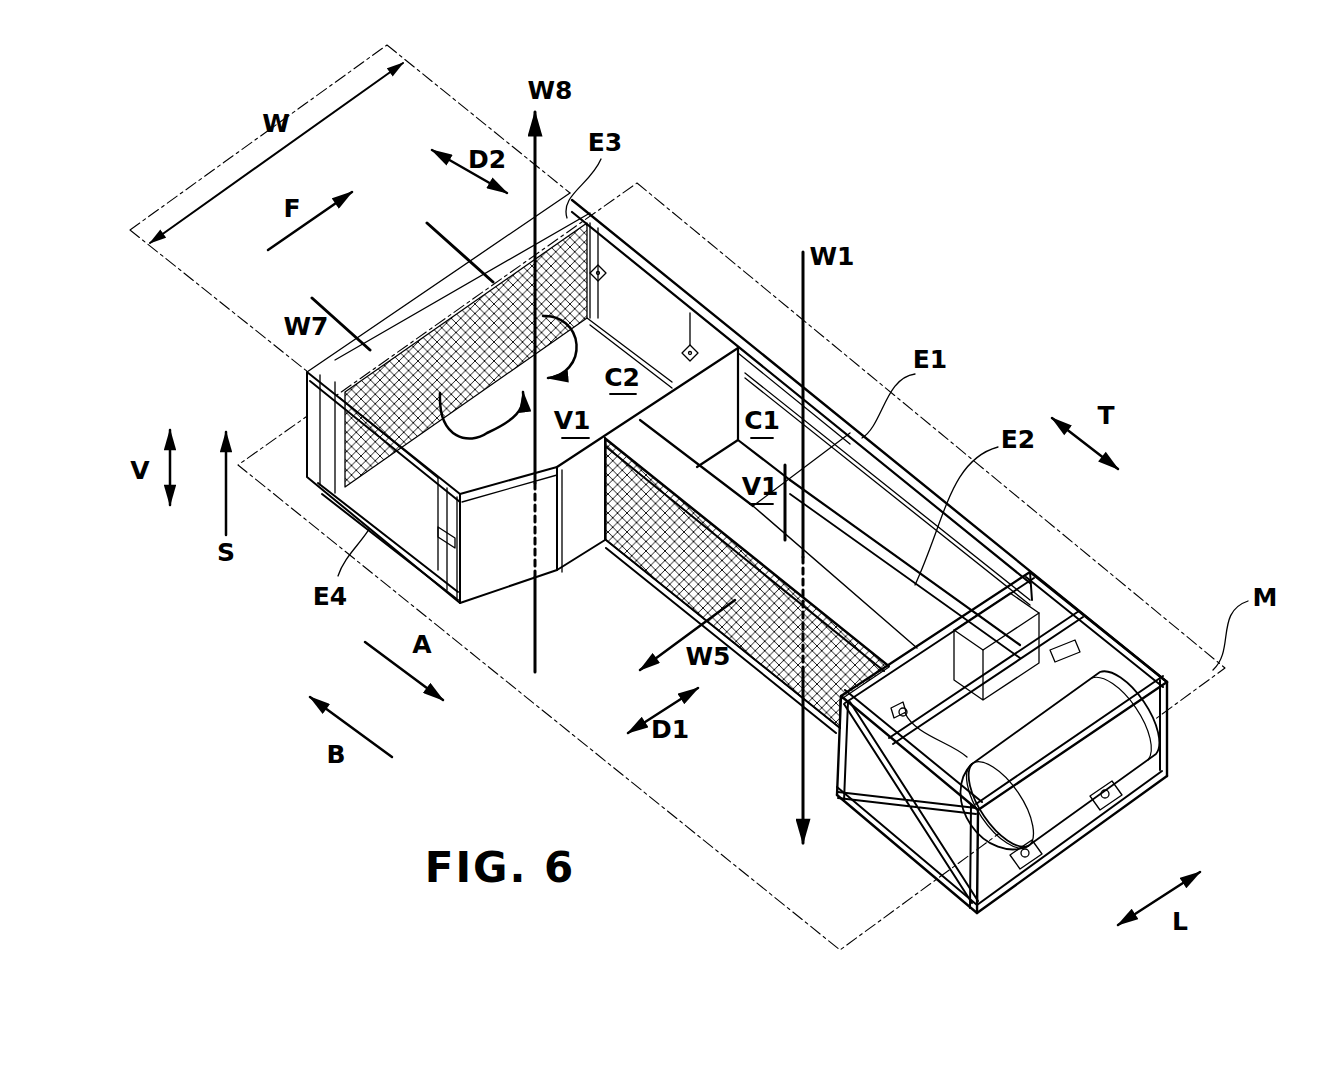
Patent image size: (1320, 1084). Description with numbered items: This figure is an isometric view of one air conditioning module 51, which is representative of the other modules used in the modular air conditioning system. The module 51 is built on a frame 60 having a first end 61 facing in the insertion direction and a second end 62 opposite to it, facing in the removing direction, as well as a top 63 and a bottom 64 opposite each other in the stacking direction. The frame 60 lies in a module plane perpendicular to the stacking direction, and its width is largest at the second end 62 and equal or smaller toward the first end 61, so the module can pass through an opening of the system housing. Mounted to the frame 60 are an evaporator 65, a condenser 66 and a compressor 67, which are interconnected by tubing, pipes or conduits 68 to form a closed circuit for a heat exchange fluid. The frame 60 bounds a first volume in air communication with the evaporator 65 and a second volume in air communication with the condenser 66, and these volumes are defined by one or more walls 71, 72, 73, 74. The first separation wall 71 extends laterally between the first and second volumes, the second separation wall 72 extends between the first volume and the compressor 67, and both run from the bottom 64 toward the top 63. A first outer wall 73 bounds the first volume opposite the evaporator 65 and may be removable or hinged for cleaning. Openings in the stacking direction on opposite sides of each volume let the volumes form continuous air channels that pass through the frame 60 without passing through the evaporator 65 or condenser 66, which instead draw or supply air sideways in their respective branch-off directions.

The air conditioning module 51 is at (1015, 287).
The frame 60 is at (742, 343).
The first end 61 is at (1005, 893).
The second end 62 is at (519, 223).
The top 63 is at (818, 393).
The bottom 64 is at (666, 604).
The evaporator 65 is at (770, 672).
The condenser 66 is at (413, 307).
The compressor 67 is at (1112, 765).
The conduits 68 is at (613, 318).
The first separation wall 71 is at (707, 395).
The second separation wall 72 is at (945, 657).
The first outer wall 73 is at (890, 500).
The wall 74 is at (546, 568).